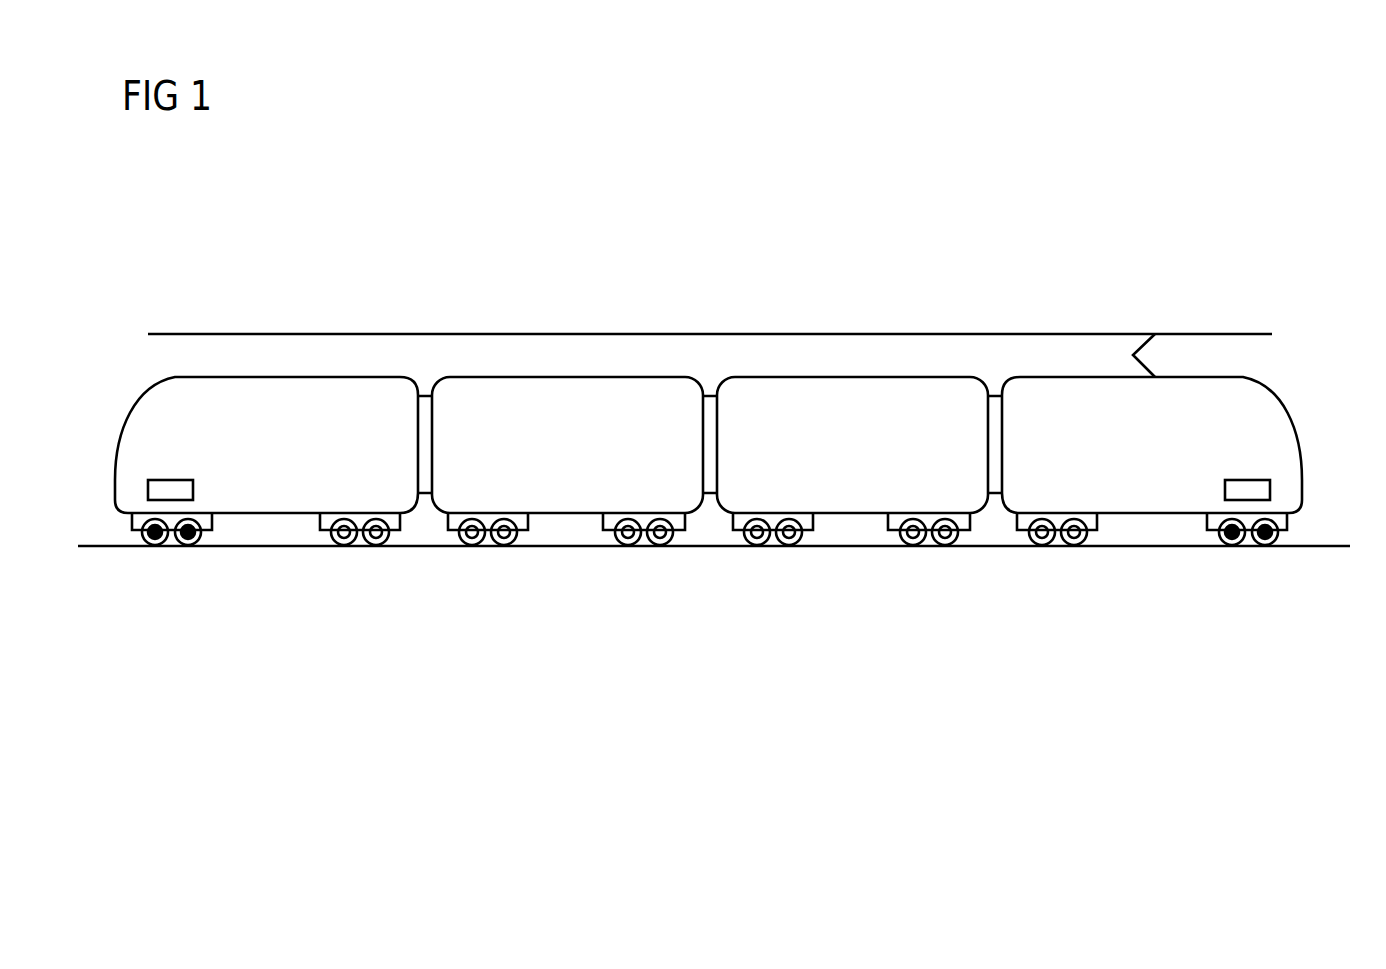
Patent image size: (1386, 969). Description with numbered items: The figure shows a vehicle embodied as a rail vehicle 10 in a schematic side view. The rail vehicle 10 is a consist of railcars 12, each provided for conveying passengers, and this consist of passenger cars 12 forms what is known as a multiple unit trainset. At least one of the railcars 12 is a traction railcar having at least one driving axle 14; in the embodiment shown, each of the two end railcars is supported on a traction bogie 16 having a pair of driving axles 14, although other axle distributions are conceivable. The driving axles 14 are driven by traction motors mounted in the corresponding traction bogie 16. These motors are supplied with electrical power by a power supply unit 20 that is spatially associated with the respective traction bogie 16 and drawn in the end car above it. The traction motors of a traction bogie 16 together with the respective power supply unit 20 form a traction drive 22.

The rail vehicle 10 is at (1223, 289).
The railcar 12 is at (316, 390).
The driving axle 14 is at (154, 546).
The traction bogie 16 is at (122, 527).
The power supply unit 20 is at (148, 488).
The traction drive 22 is at (179, 473).